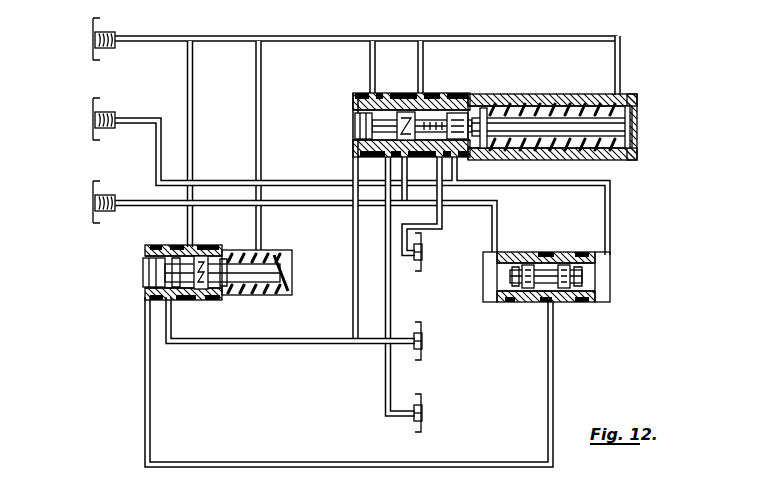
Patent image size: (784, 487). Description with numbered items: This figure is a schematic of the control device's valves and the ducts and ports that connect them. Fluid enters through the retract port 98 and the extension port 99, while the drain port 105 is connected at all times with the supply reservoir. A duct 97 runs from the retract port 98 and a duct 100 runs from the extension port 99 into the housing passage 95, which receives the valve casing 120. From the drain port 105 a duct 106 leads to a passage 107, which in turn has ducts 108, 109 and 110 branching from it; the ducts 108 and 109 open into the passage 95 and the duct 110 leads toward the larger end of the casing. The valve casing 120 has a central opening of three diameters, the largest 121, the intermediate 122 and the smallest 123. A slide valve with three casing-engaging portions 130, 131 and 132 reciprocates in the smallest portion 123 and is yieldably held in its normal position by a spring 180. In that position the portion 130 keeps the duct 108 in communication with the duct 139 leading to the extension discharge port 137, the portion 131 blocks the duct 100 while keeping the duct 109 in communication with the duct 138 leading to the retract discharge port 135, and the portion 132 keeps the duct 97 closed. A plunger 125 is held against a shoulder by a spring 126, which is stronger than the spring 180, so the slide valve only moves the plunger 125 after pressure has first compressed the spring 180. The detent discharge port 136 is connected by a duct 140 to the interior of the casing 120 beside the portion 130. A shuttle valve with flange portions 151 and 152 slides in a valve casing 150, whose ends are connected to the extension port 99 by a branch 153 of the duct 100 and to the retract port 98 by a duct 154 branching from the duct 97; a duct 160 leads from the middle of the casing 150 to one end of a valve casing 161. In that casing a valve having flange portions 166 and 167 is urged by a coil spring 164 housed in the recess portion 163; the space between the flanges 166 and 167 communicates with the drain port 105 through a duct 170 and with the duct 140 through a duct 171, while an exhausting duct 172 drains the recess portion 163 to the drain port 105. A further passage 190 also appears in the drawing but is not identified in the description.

The drain port 105 is at (93, 41).
The retract port 98 is at (93, 122).
The extension port 99 is at (93, 205).
The duct 106 is at (140, 36).
The passage 107 is at (466, 36).
The duct 108 is at (370, 56).
The duct 109 is at (422, 57).
The duct 110 is at (620, 50).
The passage 95 is at (384, 93).
The duct 97 is at (157, 158).
The duct 100 is at (143, 200).
The valve casing 120 is at (508, 94).
The largest diameter opening 121 is at (628, 97).
The intermediate diameter portion 122 is at (524, 108).
The smallest diameter portion 123 is at (430, 114).
The plunger 125 is at (617, 128).
The spring 126 is at (637, 151).
The valve portion 130 is at (362, 123).
The valve portion 131 is at (408, 118).
The valve portion 132 is at (460, 116).
The spring 180 is at (514, 148).
The conduit 190 is at (415, 168).
The duct 170 is at (188, 226).
The fluid exhausting duct 172 is at (261, 222).
The valve casing 161 is at (209, 300).
The flange portion 166 is at (199, 247).
The flange portion 167 is at (145, 273).
The coil spring 164 is at (292, 277).
The recess portion 163 is at (280, 296).
The duct 140 is at (353, 330).
The duct 171 is at (212, 343).
The duct 138 is at (437, 221).
The duct 139 is at (391, 300).
The retract discharge port 135 is at (422, 254).
The detent discharge port 136 is at (423, 339).
The extension discharge port 137 is at (423, 411).
The branch duct 153 is at (496, 222).
The duct 154 is at (610, 204).
The valve casing 150 is at (562, 302).
The flange portion 151 is at (530, 262).
The flange portion 152 is at (567, 262).
The duct 160 is at (550, 373).